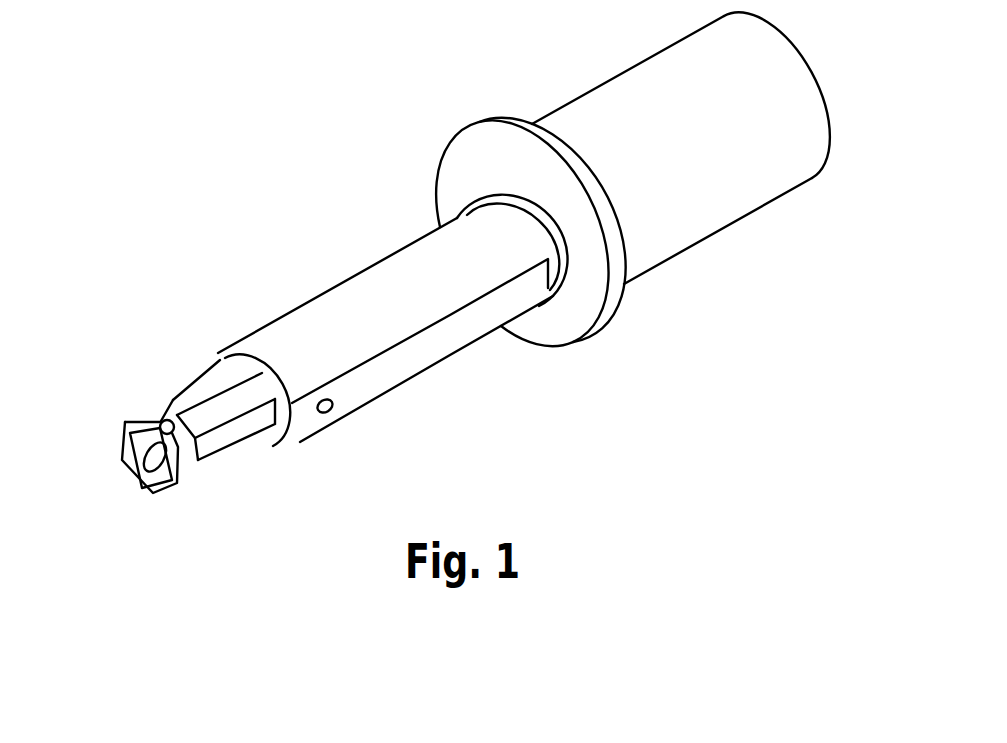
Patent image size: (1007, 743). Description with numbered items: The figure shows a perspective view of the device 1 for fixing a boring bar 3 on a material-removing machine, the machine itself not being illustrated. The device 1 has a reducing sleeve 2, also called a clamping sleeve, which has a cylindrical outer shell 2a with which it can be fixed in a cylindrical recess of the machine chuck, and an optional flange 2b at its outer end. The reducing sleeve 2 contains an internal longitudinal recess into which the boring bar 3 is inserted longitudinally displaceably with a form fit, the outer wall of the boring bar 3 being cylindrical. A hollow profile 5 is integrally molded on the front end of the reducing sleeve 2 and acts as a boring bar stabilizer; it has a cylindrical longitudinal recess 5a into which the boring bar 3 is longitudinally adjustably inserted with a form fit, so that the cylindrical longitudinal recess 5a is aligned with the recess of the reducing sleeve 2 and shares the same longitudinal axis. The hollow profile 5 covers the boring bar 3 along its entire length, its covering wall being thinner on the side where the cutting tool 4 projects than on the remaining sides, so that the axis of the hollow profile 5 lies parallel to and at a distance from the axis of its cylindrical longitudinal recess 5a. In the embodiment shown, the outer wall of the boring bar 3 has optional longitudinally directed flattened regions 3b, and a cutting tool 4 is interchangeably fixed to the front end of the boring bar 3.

The device 1 is at (214, 128).
The reducing sleeve 2 is at (591, 73).
The cylindrical outer shell 2a is at (811, 66).
The flange 2b is at (621, 306).
The boring bar 3 is at (171, 415).
The flattened regions 3b is at (222, 438).
The cutting tool 4 is at (124, 426).
The hollow profile 5 is at (393, 320).
The cylindrical longitudinal recess 5a is at (430, 367).